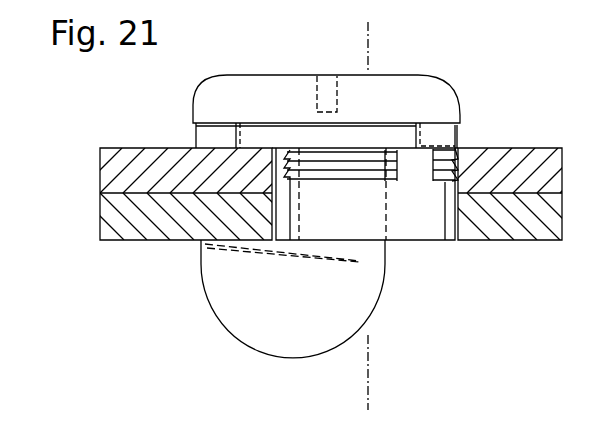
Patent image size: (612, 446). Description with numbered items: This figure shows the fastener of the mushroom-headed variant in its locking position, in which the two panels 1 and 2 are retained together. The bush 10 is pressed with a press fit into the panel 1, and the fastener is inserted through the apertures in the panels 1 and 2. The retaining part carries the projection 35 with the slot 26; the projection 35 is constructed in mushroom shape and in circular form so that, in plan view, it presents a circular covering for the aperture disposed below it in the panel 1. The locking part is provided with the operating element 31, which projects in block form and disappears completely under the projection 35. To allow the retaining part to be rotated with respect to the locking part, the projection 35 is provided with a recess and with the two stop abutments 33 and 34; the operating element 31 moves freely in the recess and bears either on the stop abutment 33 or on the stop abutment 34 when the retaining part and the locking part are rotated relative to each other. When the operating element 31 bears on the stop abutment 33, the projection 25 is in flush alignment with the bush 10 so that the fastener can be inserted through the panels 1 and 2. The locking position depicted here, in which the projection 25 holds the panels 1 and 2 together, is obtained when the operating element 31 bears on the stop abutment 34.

The panel 1 is at (549, 129).
The panel 2 is at (158, 224).
The bush 10 is at (417, 228).
The projection 25 is at (262, 336).
The slot 26 is at (326, 85).
The operating element 31 is at (459, 127).
The stop abutment 33 is at (207, 138).
The stop abutment 34 is at (443, 135).
The projection 35 is at (237, 90).